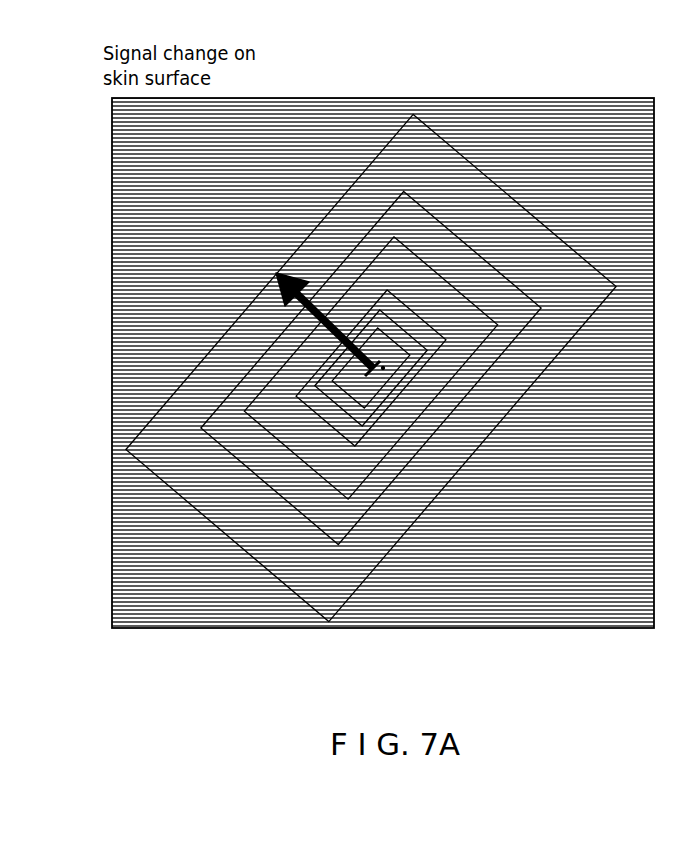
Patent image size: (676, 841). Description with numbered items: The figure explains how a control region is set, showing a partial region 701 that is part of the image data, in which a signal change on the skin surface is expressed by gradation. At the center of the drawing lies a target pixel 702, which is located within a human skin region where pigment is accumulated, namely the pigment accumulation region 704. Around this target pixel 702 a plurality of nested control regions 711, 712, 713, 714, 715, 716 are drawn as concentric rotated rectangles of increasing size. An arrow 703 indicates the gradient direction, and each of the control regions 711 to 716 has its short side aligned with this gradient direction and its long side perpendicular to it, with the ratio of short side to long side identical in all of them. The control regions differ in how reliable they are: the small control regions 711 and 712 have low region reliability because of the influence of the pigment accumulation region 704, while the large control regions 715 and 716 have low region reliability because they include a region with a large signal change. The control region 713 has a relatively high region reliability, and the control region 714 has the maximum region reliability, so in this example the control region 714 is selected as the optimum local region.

The partial region 701 is at (627, 90).
The target pixel 702 is at (364, 364).
The arrow 703 is at (408, 185).
The pigment accumulation region 704 is at (375, 362).
The control region 711 is at (358, 350).
The control region 712 is at (368, 320).
The control region 713 is at (379, 282).
The control region 714 is at (386, 229).
The control region 715 is at (457, 233).
The control region 716 is at (448, 143).